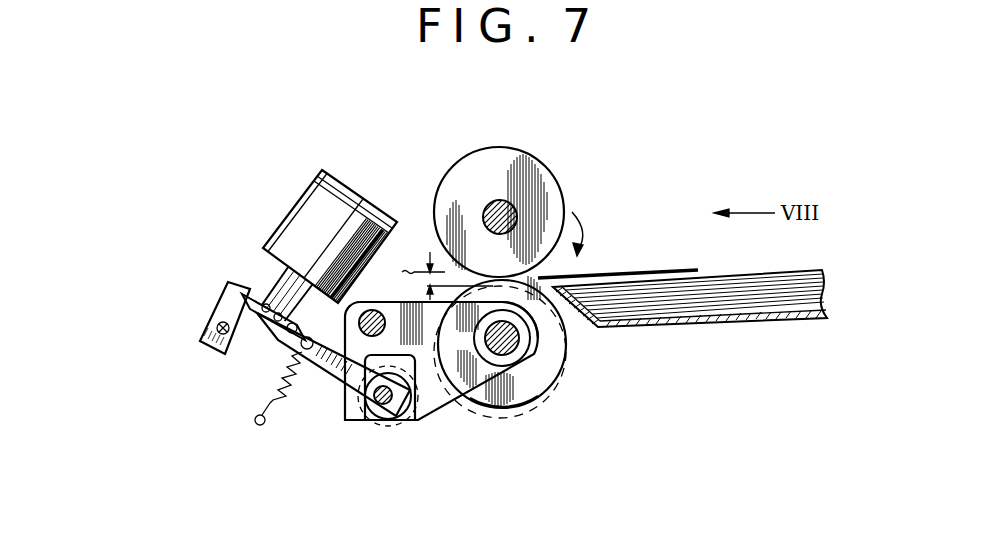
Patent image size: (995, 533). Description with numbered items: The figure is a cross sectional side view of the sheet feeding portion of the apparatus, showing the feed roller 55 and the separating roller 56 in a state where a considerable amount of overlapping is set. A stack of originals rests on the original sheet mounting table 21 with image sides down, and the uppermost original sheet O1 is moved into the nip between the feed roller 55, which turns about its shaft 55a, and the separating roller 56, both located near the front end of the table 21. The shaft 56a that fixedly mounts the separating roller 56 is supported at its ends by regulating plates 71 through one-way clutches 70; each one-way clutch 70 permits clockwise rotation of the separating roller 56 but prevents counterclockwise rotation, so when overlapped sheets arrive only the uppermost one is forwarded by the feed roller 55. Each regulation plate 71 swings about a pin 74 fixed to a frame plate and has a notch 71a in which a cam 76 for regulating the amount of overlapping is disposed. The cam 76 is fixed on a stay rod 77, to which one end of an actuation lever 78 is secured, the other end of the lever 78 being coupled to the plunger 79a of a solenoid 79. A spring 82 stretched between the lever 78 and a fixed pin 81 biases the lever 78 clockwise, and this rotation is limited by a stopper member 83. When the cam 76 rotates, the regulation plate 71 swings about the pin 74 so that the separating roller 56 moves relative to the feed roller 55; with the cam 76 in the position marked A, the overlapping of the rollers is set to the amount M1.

The feed roller 55 is at (520, 156).
The shaft of the feed roller 55a is at (497, 213).
The original sheet O1 is at (668, 268).
The original sheet mounting table 21 is at (713, 332).
The amount of overlapping M1 is at (434, 276).
The separating roller 56 is at (545, 380).
The shaft 56a is at (523, 407).
The one-way clutch 70 is at (521, 343).
The regulating plate 71 is at (485, 410).
The notch 71a is at (479, 320).
The pin 74 is at (372, 312).
The cam 76 is at (397, 418).
The cam position A is at (392, 397).
The stay rod 77 is at (379, 405).
The actuation lever 78 is at (333, 378).
The spring 82 is at (279, 400).
The fixed pin 81 is at (259, 425).
The solenoid 79 is at (313, 210).
The plunger 79a is at (280, 288).
The stopper member 83 is at (215, 360).